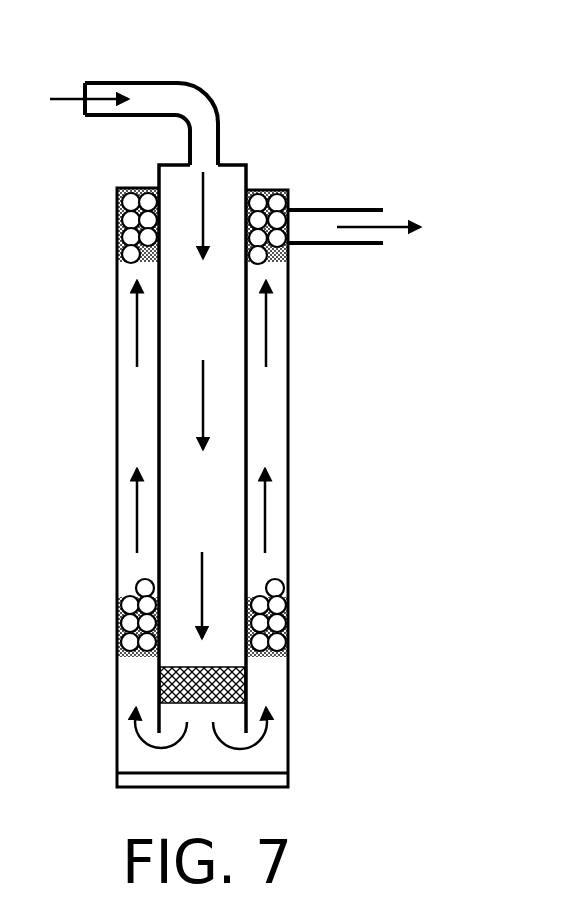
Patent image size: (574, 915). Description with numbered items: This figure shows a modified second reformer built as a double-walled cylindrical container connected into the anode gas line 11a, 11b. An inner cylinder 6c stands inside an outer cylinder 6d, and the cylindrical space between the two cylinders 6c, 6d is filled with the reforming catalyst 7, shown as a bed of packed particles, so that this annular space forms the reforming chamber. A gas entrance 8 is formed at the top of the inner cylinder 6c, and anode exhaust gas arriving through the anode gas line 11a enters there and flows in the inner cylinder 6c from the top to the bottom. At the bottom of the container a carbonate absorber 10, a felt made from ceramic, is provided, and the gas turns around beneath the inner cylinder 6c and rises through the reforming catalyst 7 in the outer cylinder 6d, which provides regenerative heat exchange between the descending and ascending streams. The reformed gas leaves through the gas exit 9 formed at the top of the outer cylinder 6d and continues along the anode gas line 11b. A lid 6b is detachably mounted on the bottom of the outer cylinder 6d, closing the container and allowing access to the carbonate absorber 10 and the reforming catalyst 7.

The lid 6b is at (275, 780).
The inner cylinder 6c is at (245, 440).
The outer cylinder 6d is at (289, 340).
The reforming catalyst 7 is at (130, 253).
The gas entrance 8 is at (185, 58).
The gas exit 9 is at (335, 210).
The carbonate absorber 10 is at (160, 685).
The anode gas line 11a is at (63, 95).
The anode gas line 11b is at (400, 222).